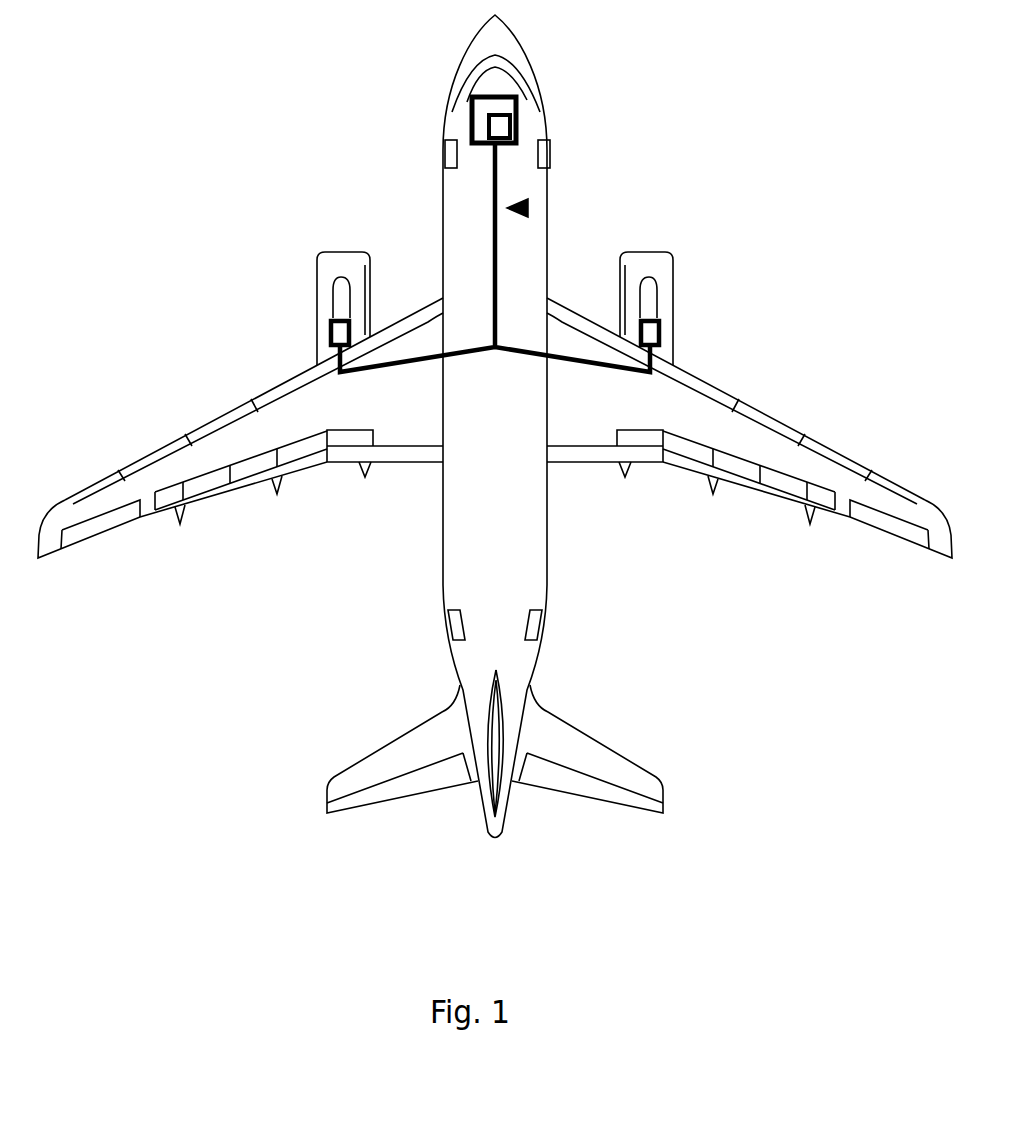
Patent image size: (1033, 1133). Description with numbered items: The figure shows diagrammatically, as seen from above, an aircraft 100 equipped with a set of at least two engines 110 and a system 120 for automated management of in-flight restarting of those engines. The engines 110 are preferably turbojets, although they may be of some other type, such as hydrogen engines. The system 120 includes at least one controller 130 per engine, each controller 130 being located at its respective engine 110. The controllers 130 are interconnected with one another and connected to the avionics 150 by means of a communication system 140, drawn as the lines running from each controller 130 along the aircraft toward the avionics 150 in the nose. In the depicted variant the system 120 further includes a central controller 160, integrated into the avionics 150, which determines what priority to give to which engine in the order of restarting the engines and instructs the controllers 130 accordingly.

The aircraft 100 is at (517, 33).
The engines 110 is at (325, 282).
The system for automated management of in-flight restarting of the engines 120 is at (526, 208).
The controller 130 is at (329, 330).
The communication system 140 is at (493, 230).
The avionics 150 is at (468, 112).
The central controller 160 is at (512, 128).